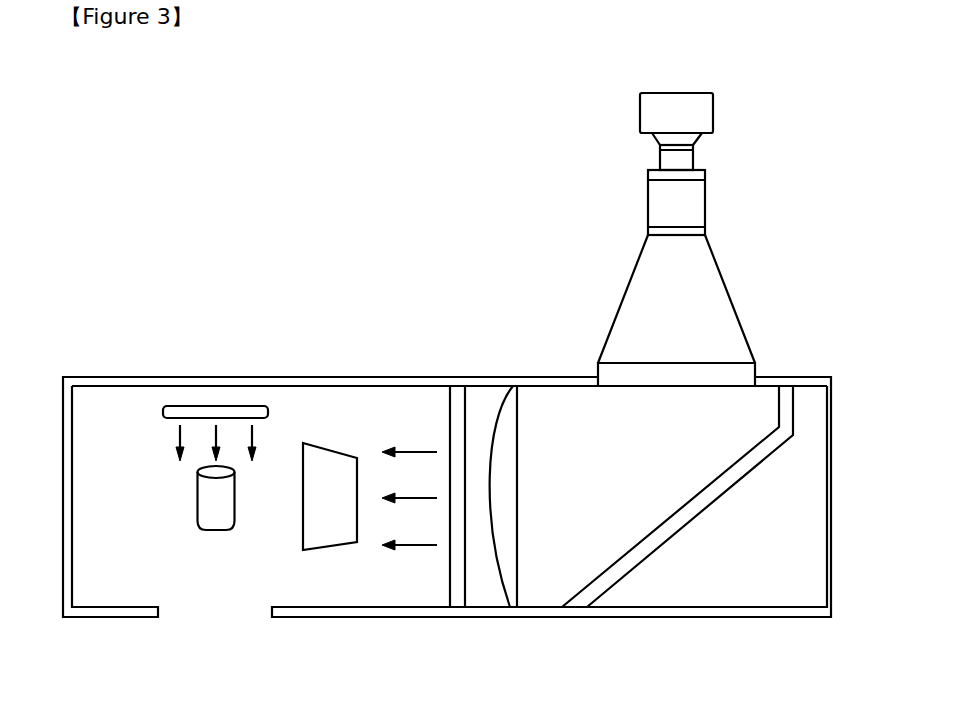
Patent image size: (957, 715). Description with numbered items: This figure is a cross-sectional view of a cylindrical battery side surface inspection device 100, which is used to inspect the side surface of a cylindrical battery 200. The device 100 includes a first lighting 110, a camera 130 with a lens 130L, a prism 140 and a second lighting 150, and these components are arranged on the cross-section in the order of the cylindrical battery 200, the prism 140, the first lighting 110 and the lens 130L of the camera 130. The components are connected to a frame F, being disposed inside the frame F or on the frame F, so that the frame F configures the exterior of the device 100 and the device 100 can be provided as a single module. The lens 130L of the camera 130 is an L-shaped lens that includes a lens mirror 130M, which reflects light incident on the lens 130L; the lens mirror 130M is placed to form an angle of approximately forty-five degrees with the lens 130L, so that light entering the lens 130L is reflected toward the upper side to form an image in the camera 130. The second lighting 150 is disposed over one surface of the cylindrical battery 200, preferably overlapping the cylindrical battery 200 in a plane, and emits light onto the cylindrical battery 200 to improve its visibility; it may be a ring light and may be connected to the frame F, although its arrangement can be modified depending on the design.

The cylindrical battery side surface inspection device 100 is at (362, 96).
The frame F is at (127, 379).
The first lighting 110 is at (452, 570).
The camera 130 is at (715, 308).
The lens 130L is at (500, 563).
The lens mirror 130M is at (678, 522).
The prism 140 is at (327, 457).
The second lighting 150 is at (215, 406).
The cylindrical battery 200 is at (217, 518).